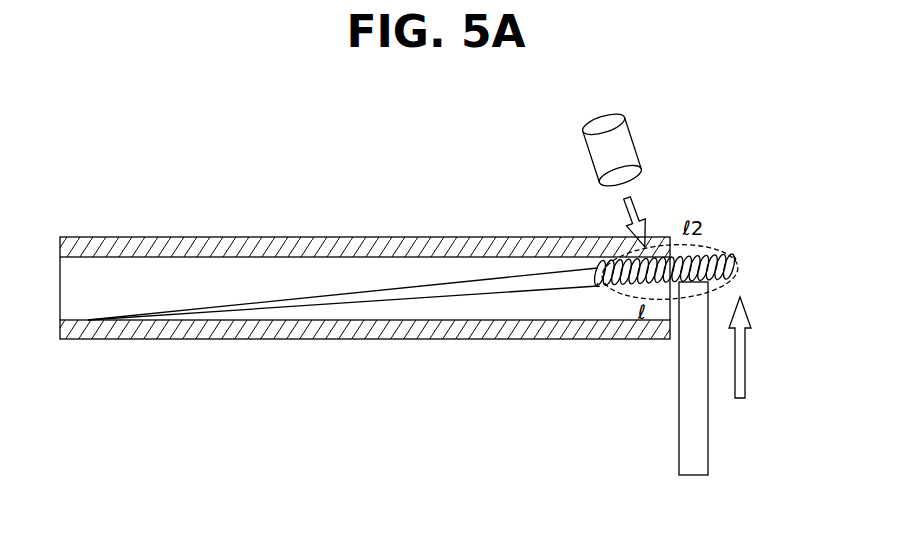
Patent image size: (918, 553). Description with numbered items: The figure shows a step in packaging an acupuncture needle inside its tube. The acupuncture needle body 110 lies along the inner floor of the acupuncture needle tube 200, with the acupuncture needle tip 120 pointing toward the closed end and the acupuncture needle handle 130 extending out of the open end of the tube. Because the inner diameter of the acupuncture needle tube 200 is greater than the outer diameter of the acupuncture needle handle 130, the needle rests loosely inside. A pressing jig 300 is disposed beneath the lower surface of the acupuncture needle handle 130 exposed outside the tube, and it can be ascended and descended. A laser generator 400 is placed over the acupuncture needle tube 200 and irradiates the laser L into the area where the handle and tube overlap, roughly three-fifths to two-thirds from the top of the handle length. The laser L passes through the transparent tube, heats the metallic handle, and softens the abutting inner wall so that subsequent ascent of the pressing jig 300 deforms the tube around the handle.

The acupuncture needle body 110 is at (462, 294).
The acupuncture needle tip 120 is at (187, 305).
The acupuncture needle handle 130 is at (737, 259).
The acupuncture needle tube 200 is at (437, 243).
The pressing jig 300 is at (692, 434).
The laser generator 400 is at (593, 143).
The laser L is at (645, 208).